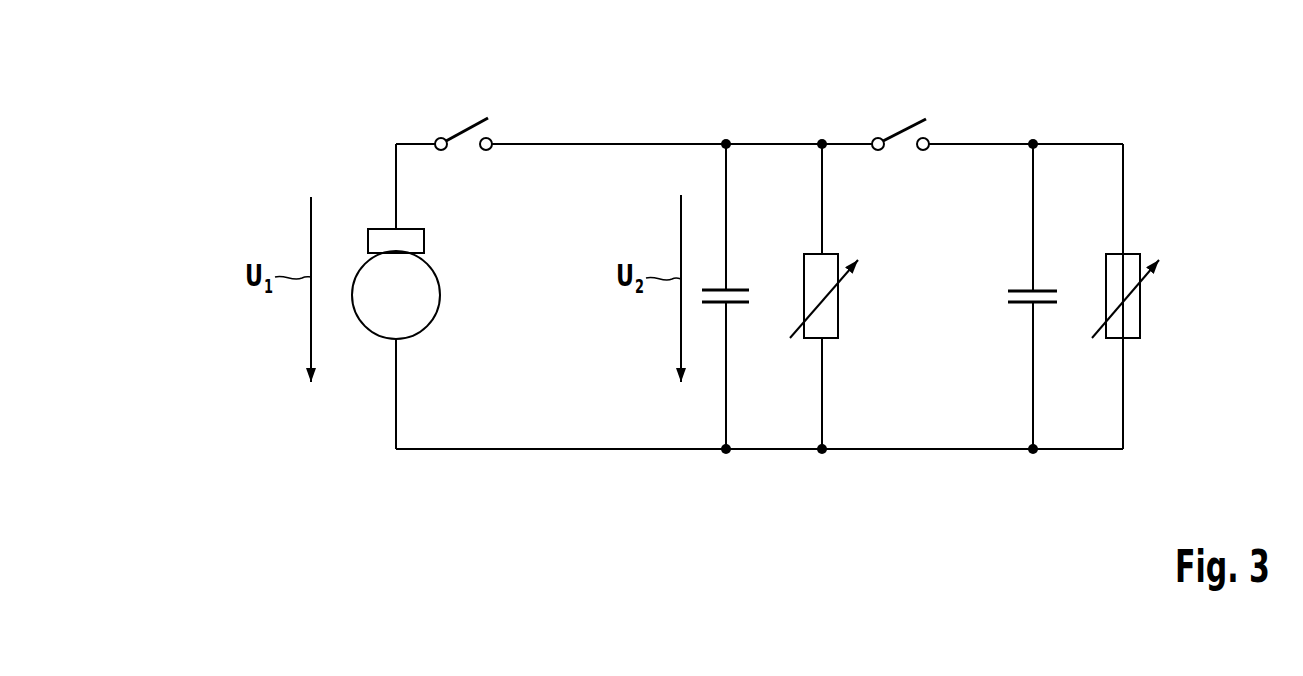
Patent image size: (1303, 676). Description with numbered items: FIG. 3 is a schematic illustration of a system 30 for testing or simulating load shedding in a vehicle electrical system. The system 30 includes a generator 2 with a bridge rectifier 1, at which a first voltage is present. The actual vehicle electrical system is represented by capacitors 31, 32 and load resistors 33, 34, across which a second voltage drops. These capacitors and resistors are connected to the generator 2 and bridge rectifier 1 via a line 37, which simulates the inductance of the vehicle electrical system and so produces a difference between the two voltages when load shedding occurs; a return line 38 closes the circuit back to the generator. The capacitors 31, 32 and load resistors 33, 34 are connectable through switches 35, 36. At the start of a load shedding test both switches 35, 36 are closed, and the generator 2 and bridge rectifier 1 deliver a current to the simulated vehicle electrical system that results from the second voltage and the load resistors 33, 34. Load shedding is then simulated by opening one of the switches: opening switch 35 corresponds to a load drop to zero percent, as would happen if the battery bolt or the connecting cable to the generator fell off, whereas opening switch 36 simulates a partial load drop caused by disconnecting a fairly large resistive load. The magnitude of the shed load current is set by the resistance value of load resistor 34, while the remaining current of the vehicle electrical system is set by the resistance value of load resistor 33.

The bridge rectifier 1 is at (424, 243).
The generator 2 is at (440, 295).
The system 30 is at (1112, 105).
The capacitor 31 is at (744, 326).
The capacitor 32 is at (1016, 320).
The load resistor 33 is at (838, 307).
The load resistor 34 is at (1140, 318).
The switch 35 is at (468, 158).
The switch 36 is at (905, 152).
The line 37 is at (606, 144).
The return line 38 is at (563, 450).